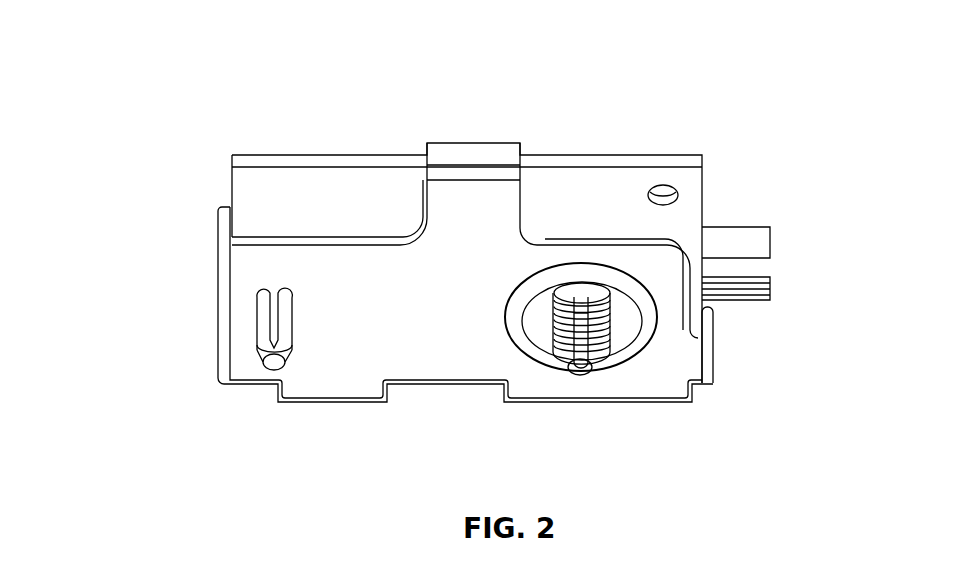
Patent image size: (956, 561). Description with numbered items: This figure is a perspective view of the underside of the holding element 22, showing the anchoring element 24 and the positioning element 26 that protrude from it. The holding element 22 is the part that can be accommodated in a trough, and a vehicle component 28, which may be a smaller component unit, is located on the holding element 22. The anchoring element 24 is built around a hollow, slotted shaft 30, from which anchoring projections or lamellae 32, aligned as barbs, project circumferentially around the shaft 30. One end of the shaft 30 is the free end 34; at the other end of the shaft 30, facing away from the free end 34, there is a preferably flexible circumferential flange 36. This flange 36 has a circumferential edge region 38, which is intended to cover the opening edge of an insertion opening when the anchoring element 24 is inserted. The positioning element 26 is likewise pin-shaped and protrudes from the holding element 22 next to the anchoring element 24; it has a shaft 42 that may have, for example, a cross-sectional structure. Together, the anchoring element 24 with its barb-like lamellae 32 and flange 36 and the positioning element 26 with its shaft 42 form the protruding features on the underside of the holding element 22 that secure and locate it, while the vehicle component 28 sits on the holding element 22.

The vehicle component 28 is at (345, 125).
The holding element 22 is at (275, 270).
The positioning element 26 is at (256, 352).
The shaft 42 is at (290, 318).
The circumferential flange 36 is at (629, 262).
The circumferential edge region 38 is at (640, 303).
The anchoring element 24 is at (668, 327).
The anchoring projections or lamellae 32 is at (602, 350).
The hollow, slotted shaft 30 is at (590, 367).
The free end 34 is at (567, 380).